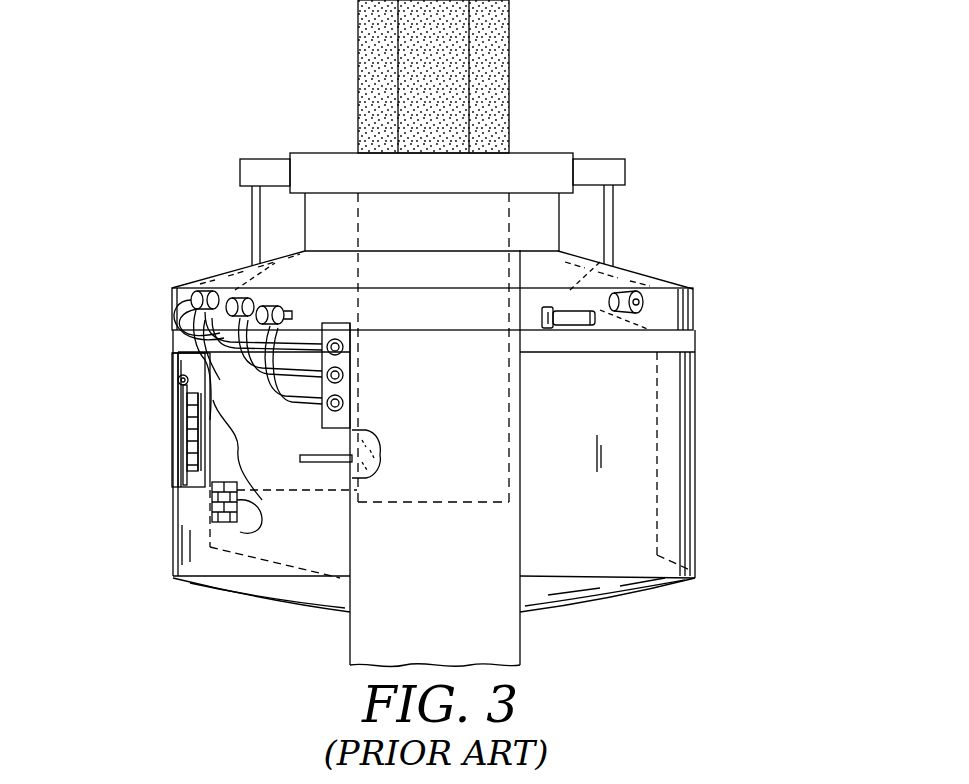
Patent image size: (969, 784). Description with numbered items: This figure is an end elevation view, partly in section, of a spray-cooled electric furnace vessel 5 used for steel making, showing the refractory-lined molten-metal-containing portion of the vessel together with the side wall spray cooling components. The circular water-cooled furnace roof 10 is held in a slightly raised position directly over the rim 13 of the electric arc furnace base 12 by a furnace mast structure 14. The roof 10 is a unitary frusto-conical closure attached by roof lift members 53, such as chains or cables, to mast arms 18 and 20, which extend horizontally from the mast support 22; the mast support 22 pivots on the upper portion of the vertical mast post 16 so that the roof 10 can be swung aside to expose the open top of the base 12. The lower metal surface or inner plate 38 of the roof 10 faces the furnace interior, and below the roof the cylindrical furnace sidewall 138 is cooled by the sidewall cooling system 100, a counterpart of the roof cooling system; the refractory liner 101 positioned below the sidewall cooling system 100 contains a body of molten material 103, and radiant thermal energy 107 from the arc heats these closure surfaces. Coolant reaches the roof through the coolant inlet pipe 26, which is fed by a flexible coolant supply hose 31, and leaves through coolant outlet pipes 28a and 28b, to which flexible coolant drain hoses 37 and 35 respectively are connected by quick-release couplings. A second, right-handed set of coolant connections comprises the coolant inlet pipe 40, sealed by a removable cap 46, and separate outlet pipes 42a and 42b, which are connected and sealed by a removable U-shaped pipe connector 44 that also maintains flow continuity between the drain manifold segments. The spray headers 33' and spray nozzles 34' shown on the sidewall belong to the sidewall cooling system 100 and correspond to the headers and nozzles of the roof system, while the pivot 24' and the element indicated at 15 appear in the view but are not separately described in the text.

The electric furnace vessel 5 is at (782, 350).
The furnace roof 10 is at (688, 262).
The electric arc furnace base 12 is at (155, 545).
The rim 13 is at (178, 352).
The furnace mast structure 14 is at (330, 268).
The conductor / pole 15 is at (528, 28).
The vertical mast post 16 is at (346, 463).
The mast arm 18 is at (598, 160).
The mast arm 20 is at (258, 160).
The mast support 22 is at (552, 222).
The bracket 24' is at (131, 421).
The coolant inlet pipe 26 is at (196, 293).
The coolant outlet pipe 28a is at (203, 290).
The coolant outlet pipe 28b is at (340, 312).
The flexible coolant supply hose 31 is at (178, 314).
The mounting strip 33' is at (140, 446).
The fastener strip 34' is at (137, 462).
The flexible coolant drain hose 35 is at (181, 386).
The flexible coolant drain hose 37 is at (195, 336).
The lower roof panel 38 is at (680, 334).
The right-handed coolant inlet pipe 40 is at (620, 290).
The right-handed coolant outlet pipe 42a is at (572, 313).
The right-handed coolant outlet pipe 42b is at (590, 326).
The pipe connector 44 is at (608, 301).
The removable cap 46 is at (692, 302).
The roof lift members 53 is at (250, 218).
The sidewall cooling system 100 is at (150, 452).
The refractory liner 101 is at (240, 496).
The body of molten material 103 is at (255, 530).
The radiant thermal energy 107 is at (347, 448).
The furnace sidewall 138 is at (220, 463).